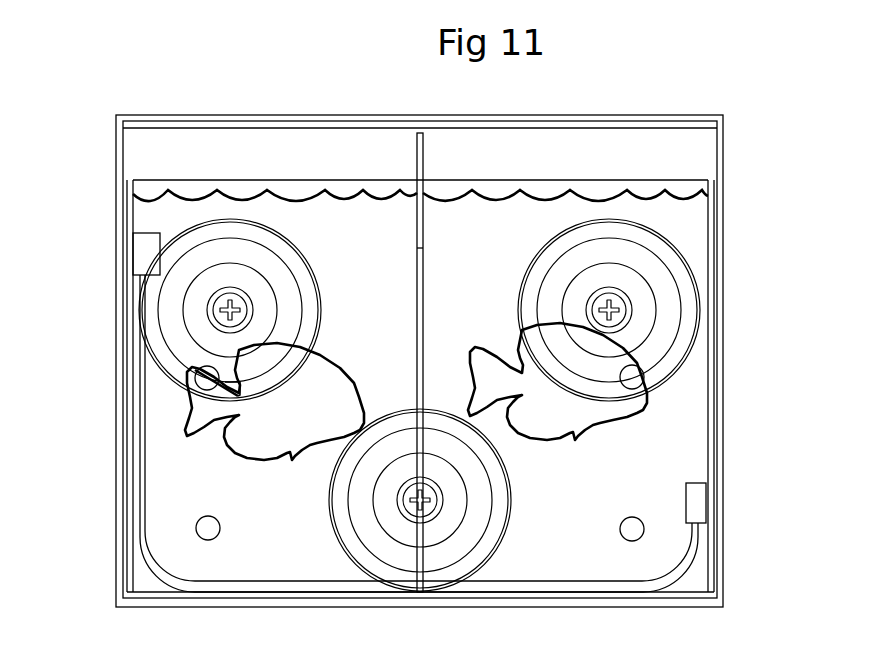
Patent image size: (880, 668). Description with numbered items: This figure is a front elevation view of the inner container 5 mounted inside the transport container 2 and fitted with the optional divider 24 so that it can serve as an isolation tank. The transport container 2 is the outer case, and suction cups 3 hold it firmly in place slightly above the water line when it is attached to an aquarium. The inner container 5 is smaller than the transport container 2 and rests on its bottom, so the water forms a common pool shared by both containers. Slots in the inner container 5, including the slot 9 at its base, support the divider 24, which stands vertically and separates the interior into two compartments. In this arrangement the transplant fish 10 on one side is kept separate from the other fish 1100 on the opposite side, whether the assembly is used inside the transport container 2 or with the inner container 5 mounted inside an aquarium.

The transport container 2 is at (724, 218).
The suction cups 3 is at (231, 220).
The inner container 5 is at (126, 212).
The slot 9 is at (420, 593).
The transplant fish 10 is at (307, 410).
The divider 24 is at (417, 170).
The fish 1100 is at (568, 417).